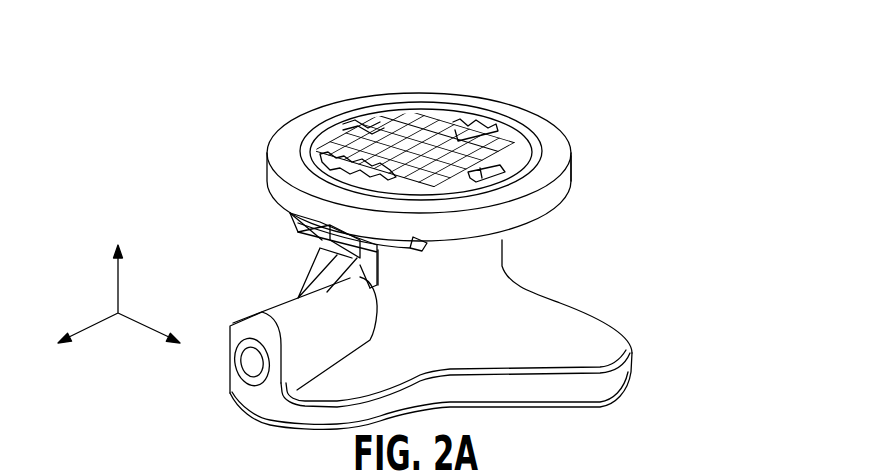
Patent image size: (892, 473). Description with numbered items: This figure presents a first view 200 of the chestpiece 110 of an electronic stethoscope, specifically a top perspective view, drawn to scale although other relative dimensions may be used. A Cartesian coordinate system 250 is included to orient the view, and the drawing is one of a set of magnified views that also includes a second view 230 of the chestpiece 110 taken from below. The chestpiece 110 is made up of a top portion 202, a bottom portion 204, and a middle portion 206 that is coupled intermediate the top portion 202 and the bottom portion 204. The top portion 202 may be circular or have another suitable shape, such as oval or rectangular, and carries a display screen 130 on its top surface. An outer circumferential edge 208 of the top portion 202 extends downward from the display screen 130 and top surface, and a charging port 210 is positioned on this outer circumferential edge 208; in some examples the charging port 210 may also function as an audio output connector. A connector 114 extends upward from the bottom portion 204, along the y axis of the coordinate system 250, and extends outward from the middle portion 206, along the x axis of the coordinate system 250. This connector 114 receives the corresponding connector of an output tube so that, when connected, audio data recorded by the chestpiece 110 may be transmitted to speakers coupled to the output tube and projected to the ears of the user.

The first view 200 is at (672, 82).
The chestpiece 110 is at (540, 107).
The display screen 130 is at (457, 125).
The top portion 202 is at (302, 124).
The outer circumferential edge 208 is at (560, 187).
The charging port 210 is at (298, 224).
The connector 114 is at (277, 313).
The middle portion 206 is at (490, 270).
The bottom portion 204 is at (600, 322).
The Cartesian coordinate system 250 is at (95, 263).
The second view 230 is at (723, 463).